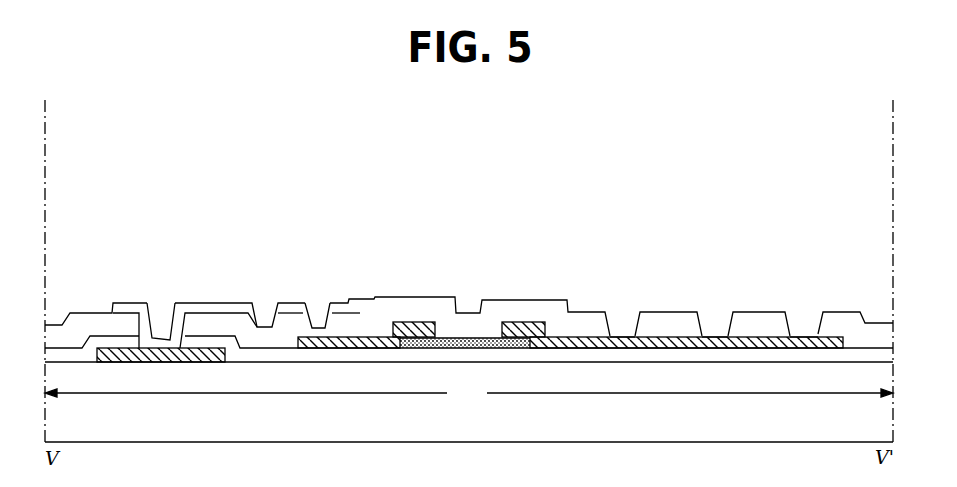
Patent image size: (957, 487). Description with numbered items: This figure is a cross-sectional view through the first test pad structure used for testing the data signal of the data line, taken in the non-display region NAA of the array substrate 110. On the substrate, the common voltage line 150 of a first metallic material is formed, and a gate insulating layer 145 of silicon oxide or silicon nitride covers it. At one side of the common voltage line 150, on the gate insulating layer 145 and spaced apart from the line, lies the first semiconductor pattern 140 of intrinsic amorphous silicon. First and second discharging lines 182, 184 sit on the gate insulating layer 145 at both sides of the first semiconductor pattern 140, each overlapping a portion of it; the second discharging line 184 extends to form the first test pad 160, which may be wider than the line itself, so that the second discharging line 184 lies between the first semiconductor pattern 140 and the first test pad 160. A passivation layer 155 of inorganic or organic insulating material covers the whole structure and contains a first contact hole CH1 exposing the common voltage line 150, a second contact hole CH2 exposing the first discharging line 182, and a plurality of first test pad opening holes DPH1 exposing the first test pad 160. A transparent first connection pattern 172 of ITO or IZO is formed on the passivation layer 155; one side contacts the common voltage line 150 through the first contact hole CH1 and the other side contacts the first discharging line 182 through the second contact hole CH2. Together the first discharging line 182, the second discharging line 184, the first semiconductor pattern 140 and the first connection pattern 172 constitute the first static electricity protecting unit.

The array substrate 110 is at (883, 424).
The common voltage line 150 is at (157, 362).
The first connection pattern 172 is at (230, 303).
The first contact hole CH1 is at (164, 299).
The second contact hole CH2 is at (323, 299).
The passivation layer 155 is at (527, 300).
The first test pad 160 is at (772, 320).
The first semiconductor pattern 140 is at (463, 337).
The first discharging line 182 is at (412, 322).
The second discharging line 184 is at (585, 337).
The gate insulating layer 145 is at (677, 312).
The first test pad opening holes DPH1 is at (627, 299).
The non-display region NAA is at (469, 393).